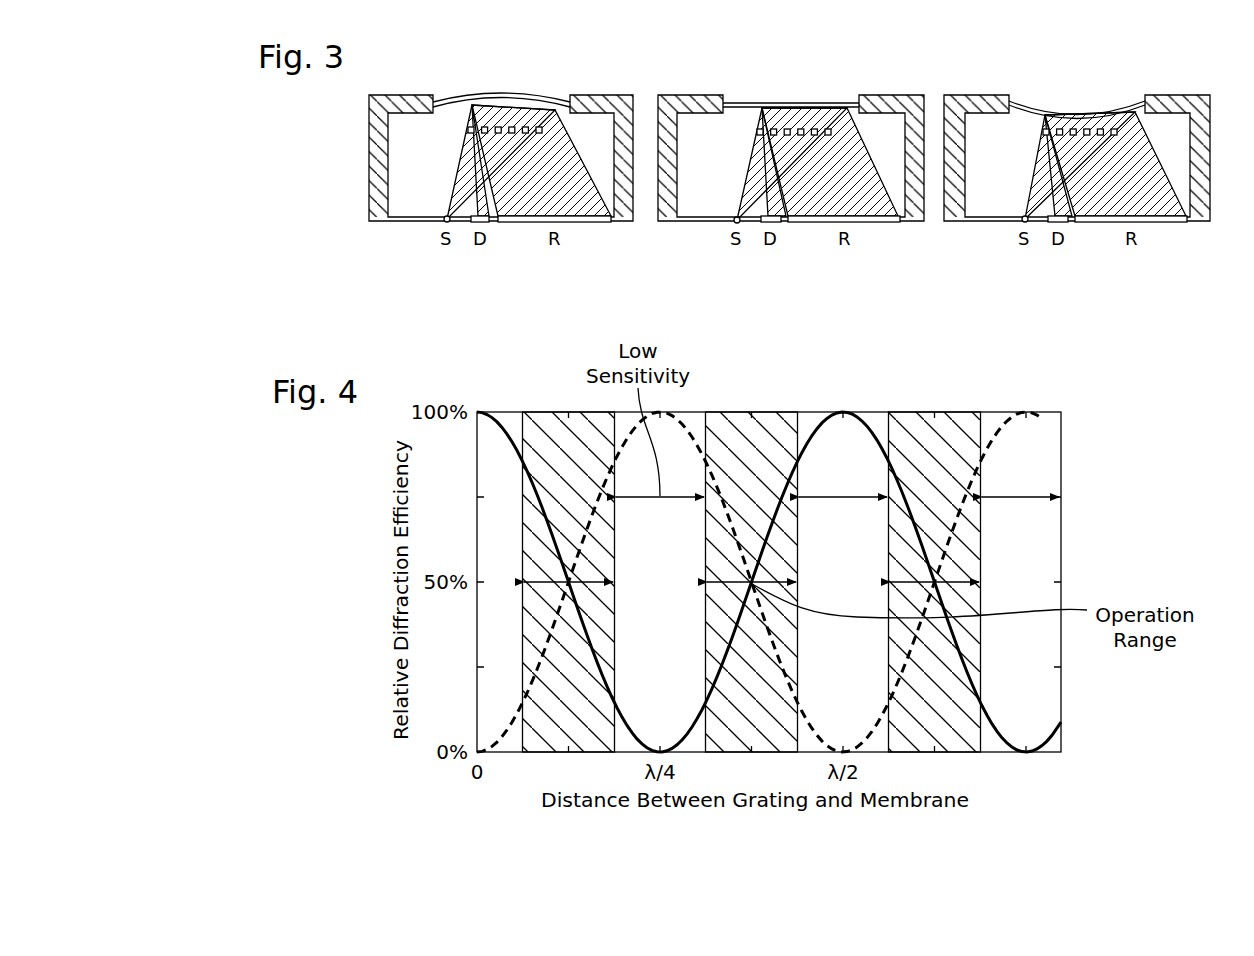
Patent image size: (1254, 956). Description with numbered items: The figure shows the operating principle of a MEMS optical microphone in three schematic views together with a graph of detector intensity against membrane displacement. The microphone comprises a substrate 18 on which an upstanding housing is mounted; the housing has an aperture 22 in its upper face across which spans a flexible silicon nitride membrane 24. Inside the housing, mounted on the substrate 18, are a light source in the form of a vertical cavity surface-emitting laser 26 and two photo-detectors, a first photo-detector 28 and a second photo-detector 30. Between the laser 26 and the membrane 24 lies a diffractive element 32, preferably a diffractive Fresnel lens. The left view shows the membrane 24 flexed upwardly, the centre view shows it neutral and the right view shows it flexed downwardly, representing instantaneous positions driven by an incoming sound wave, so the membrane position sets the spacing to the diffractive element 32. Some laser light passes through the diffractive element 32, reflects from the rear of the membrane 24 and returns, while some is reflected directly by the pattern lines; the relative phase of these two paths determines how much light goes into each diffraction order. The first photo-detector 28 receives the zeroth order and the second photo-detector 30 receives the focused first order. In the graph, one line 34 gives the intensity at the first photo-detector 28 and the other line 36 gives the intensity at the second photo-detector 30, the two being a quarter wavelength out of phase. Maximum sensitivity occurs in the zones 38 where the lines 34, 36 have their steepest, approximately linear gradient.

In FIG. 3, the substrate 18 is at (403, 221).
In FIG. 3, the aperture 22 is at (437, 98).
In FIG. 3, the membrane 24 is at (497, 96).
In FIG. 3, the laser 26 is at (447, 222).
In FIG. 3, the first photo-detector 28 is at (593, 222).
In FIG. 3, the second photo-detector 30 is at (490, 222).
In FIG. 3, the diffractive element 32 is at (527, 127).
In FIG. 4, the first line 34 is at (900, 483).
In FIG. 4, the second line 36 is at (602, 482).
In FIG. 4, the zones 38 is at (707, 392).